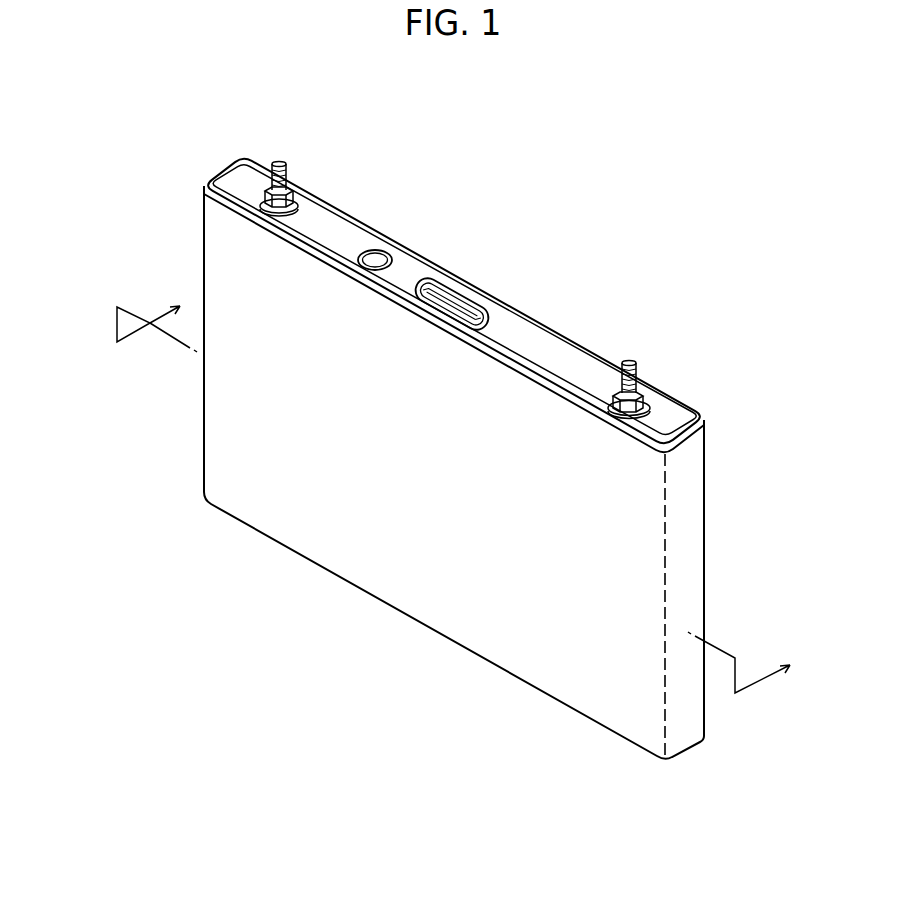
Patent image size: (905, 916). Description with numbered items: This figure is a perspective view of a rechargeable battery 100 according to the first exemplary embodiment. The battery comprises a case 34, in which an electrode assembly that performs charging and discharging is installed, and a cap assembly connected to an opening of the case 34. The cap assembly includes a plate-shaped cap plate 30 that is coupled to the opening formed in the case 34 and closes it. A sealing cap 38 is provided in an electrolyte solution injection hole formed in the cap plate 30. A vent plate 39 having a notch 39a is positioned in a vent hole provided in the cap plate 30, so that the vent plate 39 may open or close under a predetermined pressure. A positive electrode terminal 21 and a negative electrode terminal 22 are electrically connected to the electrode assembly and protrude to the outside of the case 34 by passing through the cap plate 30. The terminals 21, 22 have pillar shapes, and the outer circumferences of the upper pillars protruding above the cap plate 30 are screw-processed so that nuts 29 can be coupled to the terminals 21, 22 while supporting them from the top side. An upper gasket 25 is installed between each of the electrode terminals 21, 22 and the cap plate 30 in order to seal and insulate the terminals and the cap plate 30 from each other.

The rechargeable battery 100 is at (543, 298).
The positive electrode terminal 21 is at (281, 163).
The negative electrode terminal 22 is at (629, 362).
The upper gasket 25 is at (660, 410).
The nut 29 is at (641, 393).
The cap plate 30 is at (424, 262).
The case 34 is at (410, 596).
The sealing cap 38 is at (375, 251).
The vent plate 39 is at (451, 292).
The notch 39a is at (470, 298).